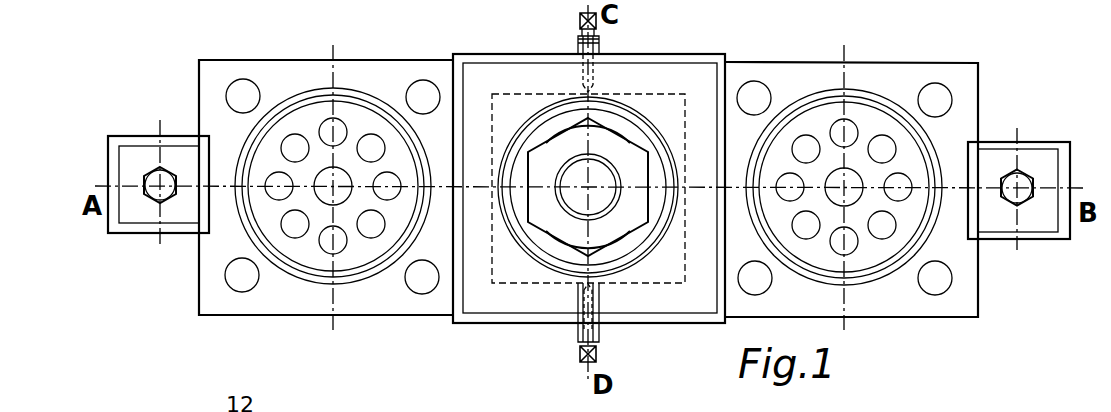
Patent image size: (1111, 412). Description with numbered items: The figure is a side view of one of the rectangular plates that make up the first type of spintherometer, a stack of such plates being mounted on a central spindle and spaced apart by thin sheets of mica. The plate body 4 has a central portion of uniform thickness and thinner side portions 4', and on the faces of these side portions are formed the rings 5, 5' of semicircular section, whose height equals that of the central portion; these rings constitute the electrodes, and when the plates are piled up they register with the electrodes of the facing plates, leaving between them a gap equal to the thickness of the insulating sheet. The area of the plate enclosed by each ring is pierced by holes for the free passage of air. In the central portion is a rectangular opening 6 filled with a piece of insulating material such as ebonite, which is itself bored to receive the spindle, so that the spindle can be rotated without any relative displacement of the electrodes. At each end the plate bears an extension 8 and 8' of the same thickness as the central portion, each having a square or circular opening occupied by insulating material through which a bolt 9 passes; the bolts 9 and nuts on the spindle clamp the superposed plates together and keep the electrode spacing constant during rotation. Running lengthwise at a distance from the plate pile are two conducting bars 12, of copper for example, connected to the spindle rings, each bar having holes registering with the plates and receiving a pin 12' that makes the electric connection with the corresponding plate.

The valve body / frame 4 is at (588, 208).
The side portions 4' is at (588, 139).
The ring 5 is at (333, 218).
The ring 5' is at (855, 222).
The rectangular opening 6 is at (514, 300).
The extension 8 is at (158, 163).
The extension 8' is at (1019, 170).
The bolt 9 is at (152, 200).
The conducting bar 12 is at (622, 188).
The pin 12' is at (562, 200).